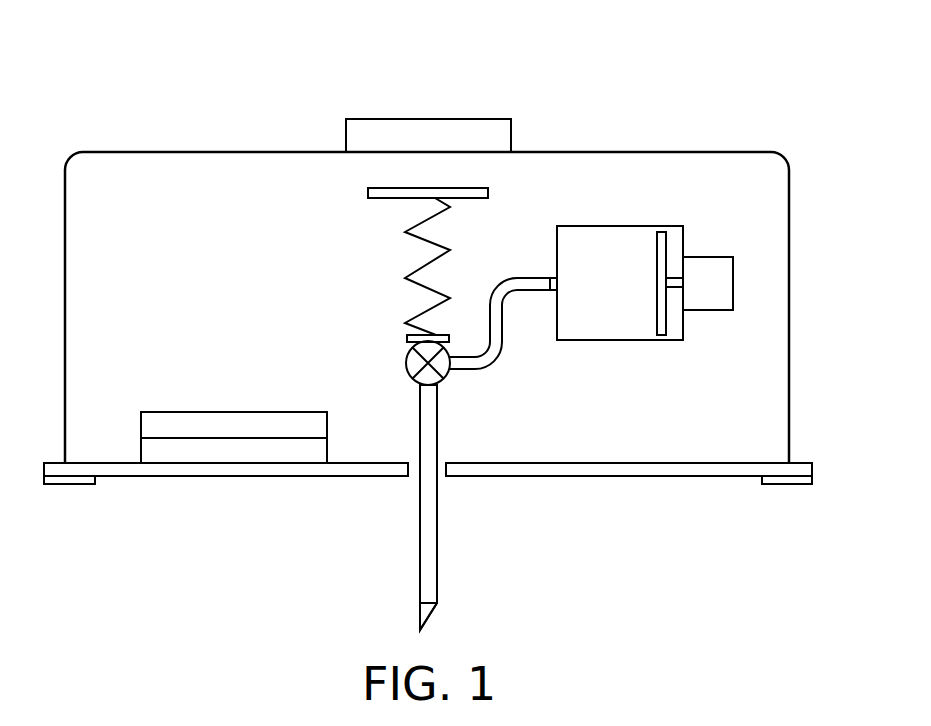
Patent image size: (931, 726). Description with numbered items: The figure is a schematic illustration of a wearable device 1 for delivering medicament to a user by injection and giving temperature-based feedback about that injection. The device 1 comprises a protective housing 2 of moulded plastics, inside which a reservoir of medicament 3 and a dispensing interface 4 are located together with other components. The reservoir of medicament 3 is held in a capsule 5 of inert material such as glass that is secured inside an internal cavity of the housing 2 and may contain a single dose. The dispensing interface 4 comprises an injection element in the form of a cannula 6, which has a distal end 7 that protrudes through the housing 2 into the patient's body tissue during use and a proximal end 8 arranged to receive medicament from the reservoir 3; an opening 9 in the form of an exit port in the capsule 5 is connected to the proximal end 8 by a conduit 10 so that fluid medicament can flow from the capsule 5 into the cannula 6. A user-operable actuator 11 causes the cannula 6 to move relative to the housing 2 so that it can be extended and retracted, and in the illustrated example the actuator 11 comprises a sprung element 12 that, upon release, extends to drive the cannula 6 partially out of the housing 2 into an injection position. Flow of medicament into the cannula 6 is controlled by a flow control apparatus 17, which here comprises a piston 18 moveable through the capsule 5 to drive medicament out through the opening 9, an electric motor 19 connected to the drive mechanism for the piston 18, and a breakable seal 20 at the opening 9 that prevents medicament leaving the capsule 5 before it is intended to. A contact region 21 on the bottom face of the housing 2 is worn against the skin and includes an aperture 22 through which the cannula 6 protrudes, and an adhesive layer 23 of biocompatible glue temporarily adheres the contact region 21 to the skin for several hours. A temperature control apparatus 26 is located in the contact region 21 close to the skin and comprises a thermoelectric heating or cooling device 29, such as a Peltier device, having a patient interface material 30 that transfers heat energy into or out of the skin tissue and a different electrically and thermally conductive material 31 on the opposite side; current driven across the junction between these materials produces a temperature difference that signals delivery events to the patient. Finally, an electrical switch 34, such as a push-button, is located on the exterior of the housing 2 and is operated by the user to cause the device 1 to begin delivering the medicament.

The device 1 is at (731, 84).
The protective housing 2 is at (782, 157).
The reservoir of medicament 3 is at (620, 313).
The dispensing interface 4 is at (460, 505).
The capsule 5 is at (618, 342).
The cannula 6 is at (438, 548).
The distal end 7 is at (432, 605).
The proximal end 8 is at (438, 405).
The opening 9 is at (562, 281).
The conduit 10 is at (497, 360).
The user-operable actuator 11 is at (379, 243).
The sprung element 12 is at (443, 252).
The flow control apparatus 17 is at (698, 241).
The piston 18 is at (657, 240).
The electric motor 19 is at (699, 283).
The seal 20 is at (552, 292).
The contact region 21 is at (290, 536).
The aperture 22 is at (412, 478).
The adhesive layer 23 is at (68, 485).
The temperature control apparatus 26 is at (148, 397).
The thermoelectric heating or cooling device 29 is at (213, 412).
The patient interface material 30 is at (322, 449).
The electrically and thermally conductive material 31 is at (322, 424).
The electrical switch 34 is at (488, 119).